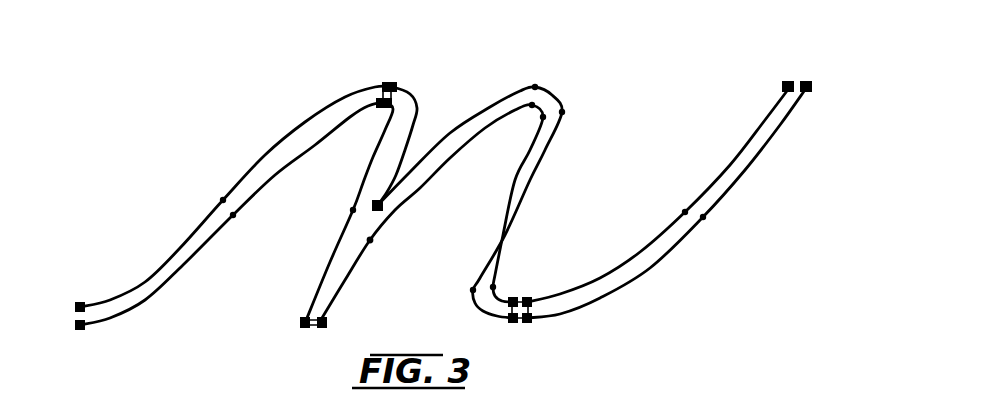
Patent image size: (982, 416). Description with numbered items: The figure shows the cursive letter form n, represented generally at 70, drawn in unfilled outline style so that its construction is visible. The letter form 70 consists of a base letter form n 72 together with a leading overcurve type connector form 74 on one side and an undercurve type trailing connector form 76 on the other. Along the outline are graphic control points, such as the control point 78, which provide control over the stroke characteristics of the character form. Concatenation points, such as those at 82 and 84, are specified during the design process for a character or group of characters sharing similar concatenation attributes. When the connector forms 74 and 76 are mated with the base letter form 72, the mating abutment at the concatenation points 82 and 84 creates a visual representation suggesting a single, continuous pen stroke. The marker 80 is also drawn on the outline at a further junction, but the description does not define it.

The cursive letter form n 70 is at (443, 184).
The base letter form n 72 is at (496, 86).
The leading overcurve type connector form 74 is at (226, 183).
The undercurve type trailing connector form 76 is at (720, 166).
The control point 78 is at (371, 241).
The lower hairpin connector 80 is at (305, 329).
The concatenation point 82 is at (379, 80).
The concatenation point 84 is at (527, 331).